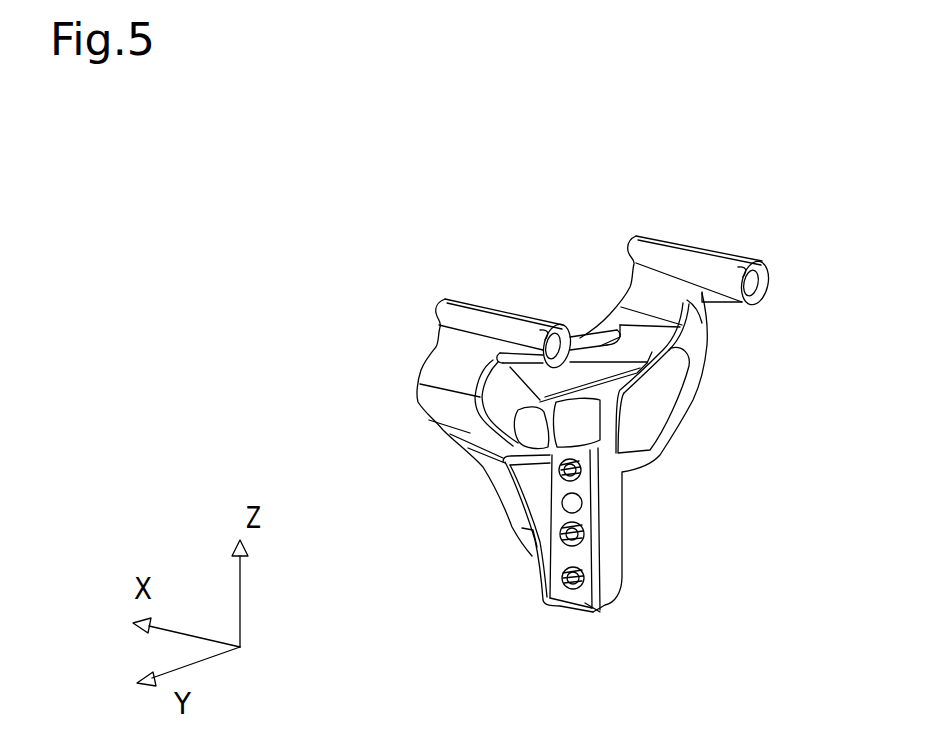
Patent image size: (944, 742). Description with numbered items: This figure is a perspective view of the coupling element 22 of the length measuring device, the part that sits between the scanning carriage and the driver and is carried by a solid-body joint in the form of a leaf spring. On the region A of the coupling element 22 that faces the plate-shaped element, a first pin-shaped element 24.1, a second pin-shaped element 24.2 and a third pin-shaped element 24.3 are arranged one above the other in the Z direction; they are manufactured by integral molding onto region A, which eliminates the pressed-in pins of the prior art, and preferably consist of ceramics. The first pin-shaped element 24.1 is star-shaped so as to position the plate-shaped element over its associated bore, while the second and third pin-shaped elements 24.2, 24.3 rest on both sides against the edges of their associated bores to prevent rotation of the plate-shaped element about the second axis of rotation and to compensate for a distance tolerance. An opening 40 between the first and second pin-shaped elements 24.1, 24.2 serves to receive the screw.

The coupling element 22 is at (458, 383).
The first pin-shaped element 24.1 is at (568, 535).
The second pin-shaped element 24.2 is at (558, 469).
The third pin-shaped element 24.3 is at (573, 580).
The opening 40 is at (575, 503).
The region of the coupling element A is at (585, 603).